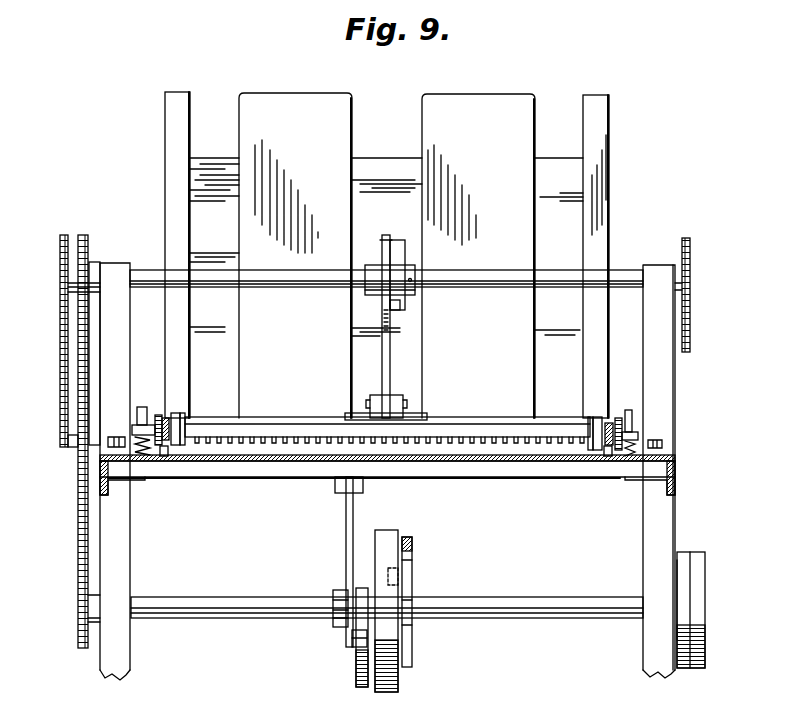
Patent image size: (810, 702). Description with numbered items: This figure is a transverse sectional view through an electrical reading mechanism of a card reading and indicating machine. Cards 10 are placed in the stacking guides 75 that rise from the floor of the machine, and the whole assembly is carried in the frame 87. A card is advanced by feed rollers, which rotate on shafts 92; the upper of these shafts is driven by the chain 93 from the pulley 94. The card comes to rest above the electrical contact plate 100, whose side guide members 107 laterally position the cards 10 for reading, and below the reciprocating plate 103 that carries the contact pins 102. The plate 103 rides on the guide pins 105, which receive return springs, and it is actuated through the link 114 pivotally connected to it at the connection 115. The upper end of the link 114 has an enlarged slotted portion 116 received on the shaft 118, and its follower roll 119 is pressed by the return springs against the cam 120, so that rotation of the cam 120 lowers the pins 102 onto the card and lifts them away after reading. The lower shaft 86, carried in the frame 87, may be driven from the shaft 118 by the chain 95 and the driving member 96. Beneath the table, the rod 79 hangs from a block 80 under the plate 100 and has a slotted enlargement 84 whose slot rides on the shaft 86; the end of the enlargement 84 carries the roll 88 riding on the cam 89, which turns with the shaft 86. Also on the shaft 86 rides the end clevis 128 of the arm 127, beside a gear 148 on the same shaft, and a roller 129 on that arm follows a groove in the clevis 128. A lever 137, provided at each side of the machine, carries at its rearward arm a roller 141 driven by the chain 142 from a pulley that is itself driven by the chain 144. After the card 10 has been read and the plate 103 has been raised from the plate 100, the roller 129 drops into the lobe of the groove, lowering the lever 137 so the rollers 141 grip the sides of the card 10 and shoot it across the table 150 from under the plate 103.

The stacking guides 75 is at (190, 92).
The cards 10 is at (210, 160).
The frame 87 is at (118, 560).
The chain 93 is at (62, 352).
The chain 95 is at (86, 528).
The pulley 94 is at (72, 262).
The shafts 92 is at (92, 437).
The driving member 96 is at (95, 600).
The shaft 118 is at (148, 276).
The chain 144 is at (690, 332).
The link 114 is at (390, 370).
The cam 120 is at (400, 248).
The enlarged slotted portion 116 is at (388, 236).
The follower roll 119 is at (400, 302).
The pivotal connection 115 is at (405, 403).
The contact pins 102 is at (484, 440).
The reciprocating plate 103 is at (547, 422).
The guide pins 105 is at (143, 407).
The chain 142 is at (158, 415).
The lever 137 is at (170, 420).
The roller 141 is at (182, 421).
The side guide members 107 is at (165, 462).
The table 150 is at (251, 462).
The electrical contact plate 100 is at (511, 462).
The block 80 is at (362, 484).
The rod 79 is at (345, 543).
The slotted enlargement 84 is at (345, 580).
The gear 148 is at (390, 536).
The roller 129 is at (405, 573).
The arm 127 is at (408, 592).
The end clevis 128 is at (410, 641).
The shaft 86 is at (541, 613).
The cam 89 is at (363, 655).
The roll 88 is at (355, 645).